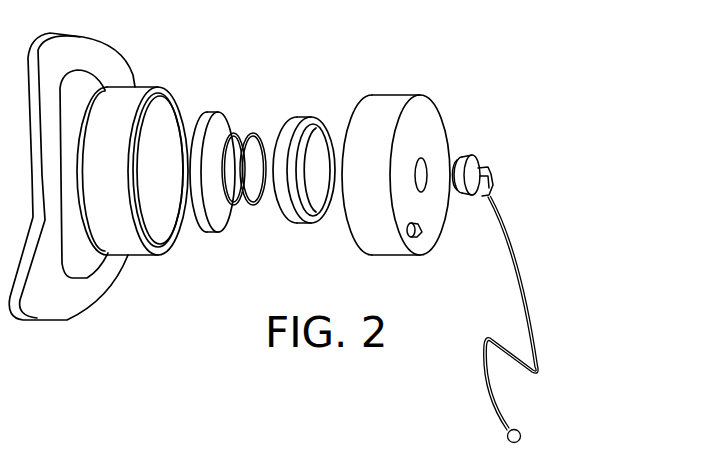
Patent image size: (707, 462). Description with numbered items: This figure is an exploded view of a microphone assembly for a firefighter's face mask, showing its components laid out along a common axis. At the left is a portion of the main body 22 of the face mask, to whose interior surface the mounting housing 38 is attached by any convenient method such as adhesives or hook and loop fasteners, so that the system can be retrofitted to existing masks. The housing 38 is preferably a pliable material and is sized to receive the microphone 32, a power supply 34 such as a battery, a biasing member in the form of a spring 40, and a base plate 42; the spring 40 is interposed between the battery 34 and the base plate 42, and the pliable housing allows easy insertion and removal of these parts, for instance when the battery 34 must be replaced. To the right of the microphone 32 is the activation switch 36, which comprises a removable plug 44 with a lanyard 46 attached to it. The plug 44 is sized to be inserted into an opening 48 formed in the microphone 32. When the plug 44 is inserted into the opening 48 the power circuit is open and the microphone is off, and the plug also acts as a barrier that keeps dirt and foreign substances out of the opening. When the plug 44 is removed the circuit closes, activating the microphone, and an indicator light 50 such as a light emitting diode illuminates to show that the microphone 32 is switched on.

The main body 22 is at (66, 306).
The mounting housing 38 is at (140, 258).
The base plate 42 is at (218, 217).
The spring 40 is at (258, 207).
The power supply 34 is at (316, 222).
The microphone 32 is at (432, 118).
The opening 48 is at (425, 168).
The indicator light 50 is at (418, 234).
The activation switch 36 is at (521, 286).
The removable plug 44 is at (470, 197).
The lanyard 46 is at (517, 265).